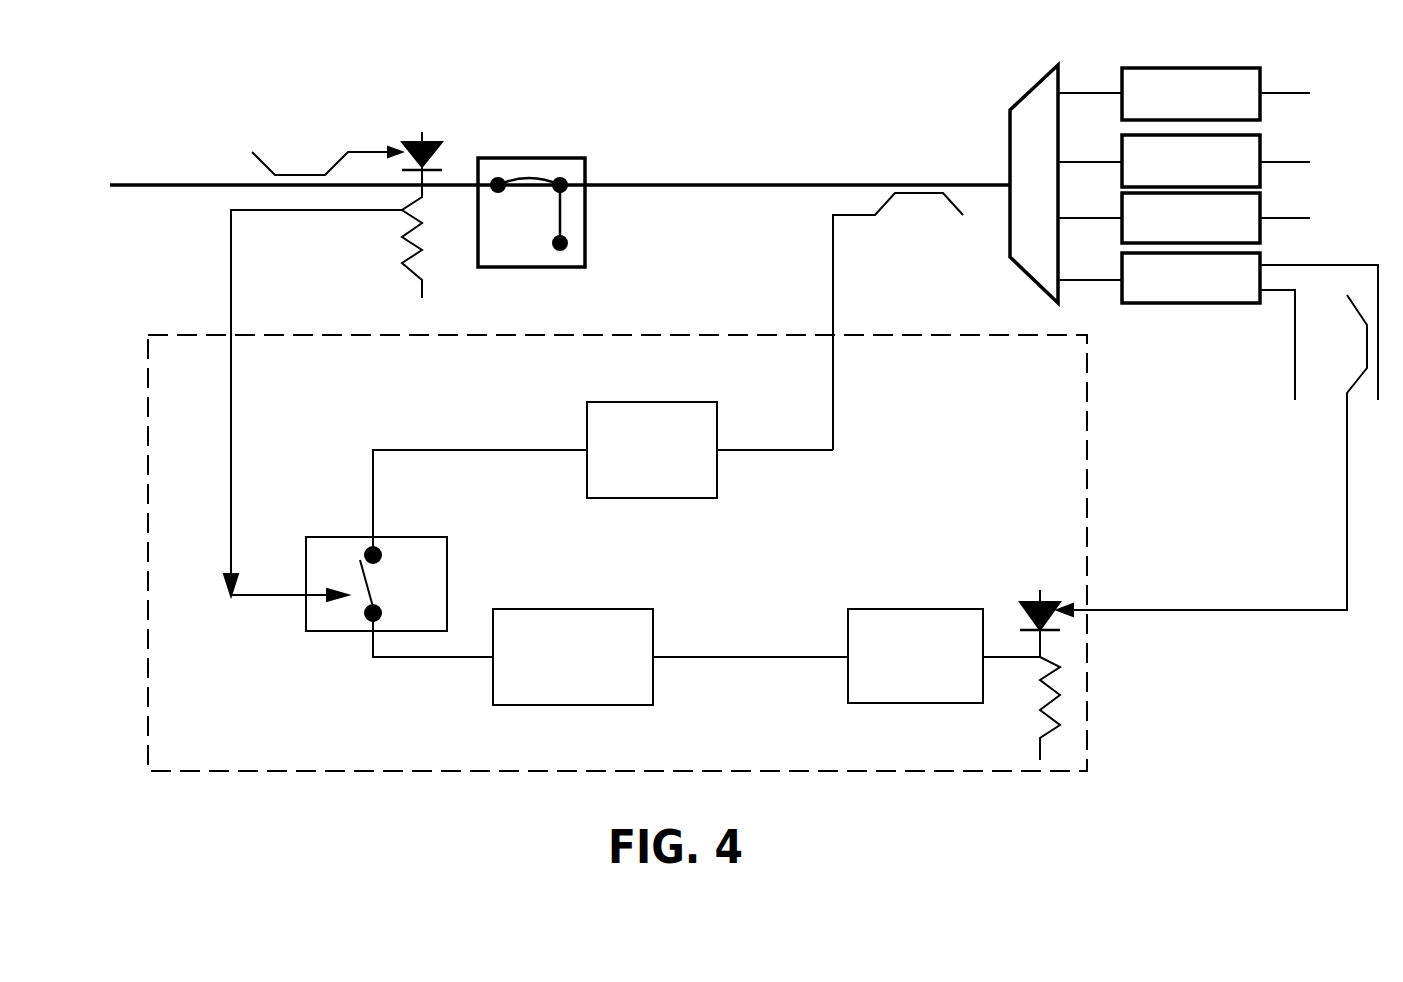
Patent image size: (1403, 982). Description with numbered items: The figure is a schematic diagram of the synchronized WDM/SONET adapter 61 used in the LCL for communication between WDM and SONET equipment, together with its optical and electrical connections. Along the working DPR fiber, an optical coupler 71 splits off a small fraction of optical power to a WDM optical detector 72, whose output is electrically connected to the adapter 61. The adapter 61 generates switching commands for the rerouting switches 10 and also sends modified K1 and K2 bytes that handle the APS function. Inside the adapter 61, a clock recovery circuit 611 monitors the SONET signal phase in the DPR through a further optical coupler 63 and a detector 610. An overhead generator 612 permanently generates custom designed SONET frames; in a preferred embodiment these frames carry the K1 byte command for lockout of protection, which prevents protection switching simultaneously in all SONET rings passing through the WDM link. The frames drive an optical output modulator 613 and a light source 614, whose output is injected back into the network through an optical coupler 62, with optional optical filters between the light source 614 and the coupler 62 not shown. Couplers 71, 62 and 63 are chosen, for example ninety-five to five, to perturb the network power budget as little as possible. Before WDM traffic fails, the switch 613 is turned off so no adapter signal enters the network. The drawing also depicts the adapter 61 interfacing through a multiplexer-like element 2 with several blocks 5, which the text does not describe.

The multiplexer 2 is at (1030, 209).
The subscriber line circuit 5 is at (1183, 106).
The rerouting switches 10 is at (503, 248).
The WDM/SONET adapter 61 is at (185, 743).
The optical coupler 62 is at (921, 192).
The optical coupler 63 is at (1360, 370).
The optical coupler 71 is at (304, 175).
The WDM optical detector 72 is at (426, 140).
The detector 610 is at (1037, 598).
The clock recovery circuit 611 is at (900, 668).
The overhead generator 612 is at (553, 668).
The optical output modulator 613 is at (396, 590).
The light source 614 is at (640, 458).